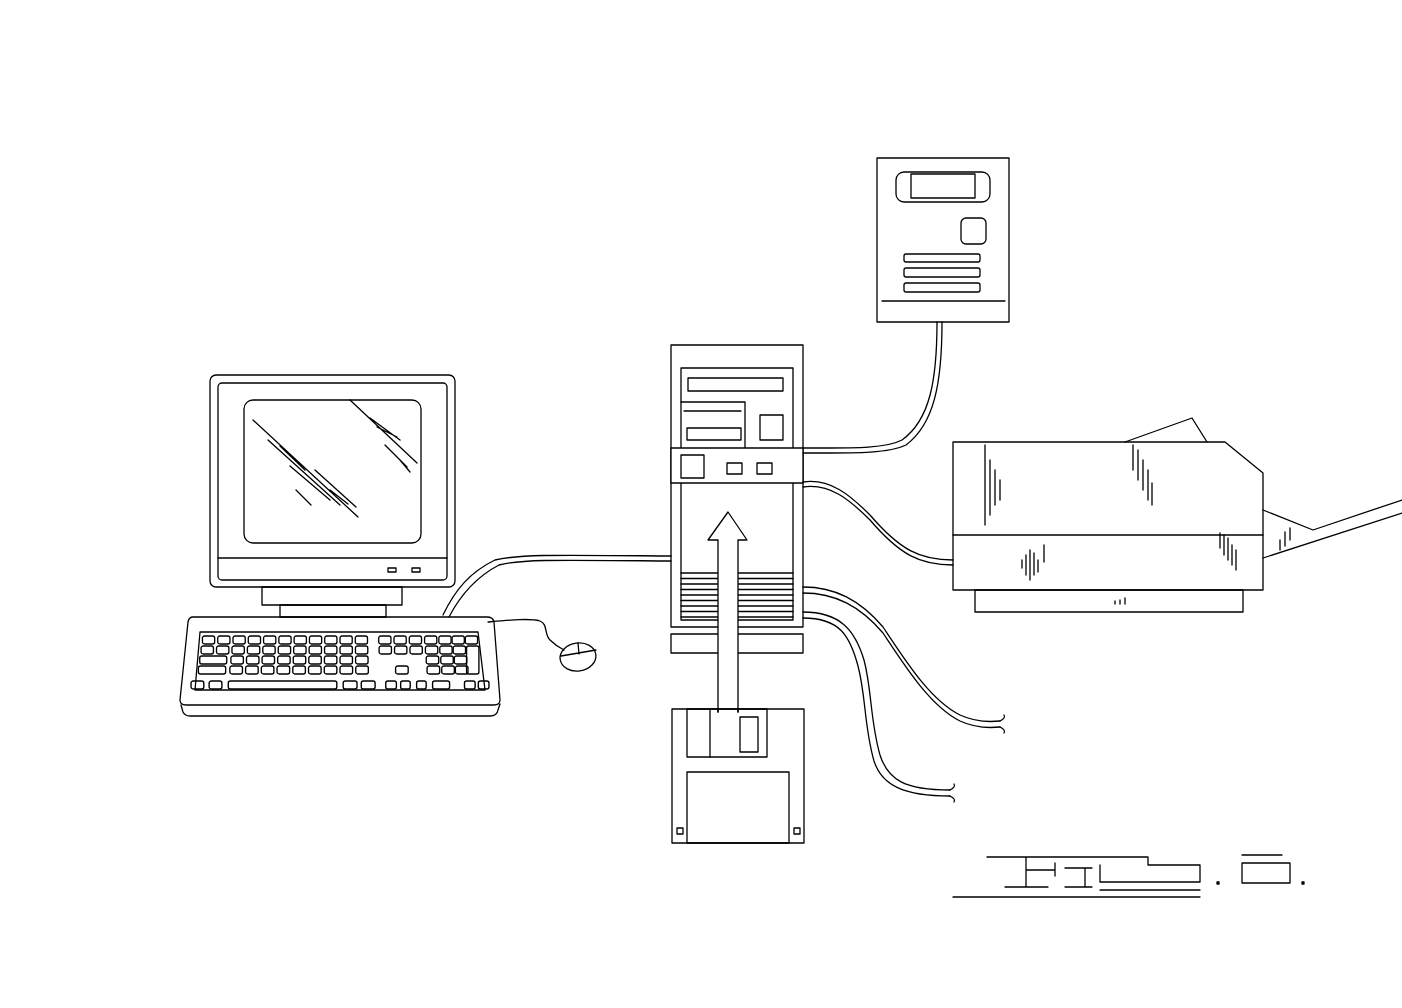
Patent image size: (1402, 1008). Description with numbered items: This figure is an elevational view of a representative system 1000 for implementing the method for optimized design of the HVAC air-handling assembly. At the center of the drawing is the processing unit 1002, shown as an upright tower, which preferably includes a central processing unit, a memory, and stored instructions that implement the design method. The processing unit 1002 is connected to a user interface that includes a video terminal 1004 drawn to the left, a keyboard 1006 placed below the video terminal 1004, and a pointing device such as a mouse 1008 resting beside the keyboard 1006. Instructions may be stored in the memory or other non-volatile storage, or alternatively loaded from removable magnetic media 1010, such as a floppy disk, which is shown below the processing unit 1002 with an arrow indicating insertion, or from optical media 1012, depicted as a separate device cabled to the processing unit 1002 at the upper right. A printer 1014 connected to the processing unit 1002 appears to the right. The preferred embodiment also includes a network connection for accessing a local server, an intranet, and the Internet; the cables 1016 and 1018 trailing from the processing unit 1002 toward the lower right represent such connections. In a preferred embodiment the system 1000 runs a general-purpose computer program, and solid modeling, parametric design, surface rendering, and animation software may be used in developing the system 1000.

The system 1000 is at (552, 177).
The processing unit 1002 is at (723, 345).
The video terminal 1004 is at (340, 375).
The keyboard 1006 is at (208, 715).
The mouse 1008 is at (578, 672).
The removable magnetic media 1010 is at (672, 797).
The optical media 1012 is at (1009, 178).
The printer 1014 is at (1040, 442).
The network connection 1016 is at (907, 797).
The network connection 1018 is at (962, 713).